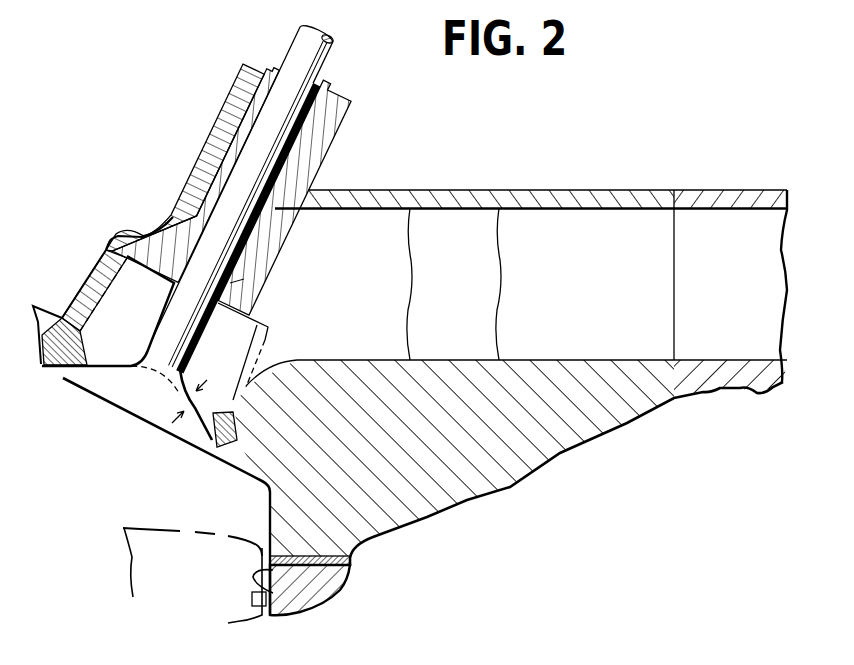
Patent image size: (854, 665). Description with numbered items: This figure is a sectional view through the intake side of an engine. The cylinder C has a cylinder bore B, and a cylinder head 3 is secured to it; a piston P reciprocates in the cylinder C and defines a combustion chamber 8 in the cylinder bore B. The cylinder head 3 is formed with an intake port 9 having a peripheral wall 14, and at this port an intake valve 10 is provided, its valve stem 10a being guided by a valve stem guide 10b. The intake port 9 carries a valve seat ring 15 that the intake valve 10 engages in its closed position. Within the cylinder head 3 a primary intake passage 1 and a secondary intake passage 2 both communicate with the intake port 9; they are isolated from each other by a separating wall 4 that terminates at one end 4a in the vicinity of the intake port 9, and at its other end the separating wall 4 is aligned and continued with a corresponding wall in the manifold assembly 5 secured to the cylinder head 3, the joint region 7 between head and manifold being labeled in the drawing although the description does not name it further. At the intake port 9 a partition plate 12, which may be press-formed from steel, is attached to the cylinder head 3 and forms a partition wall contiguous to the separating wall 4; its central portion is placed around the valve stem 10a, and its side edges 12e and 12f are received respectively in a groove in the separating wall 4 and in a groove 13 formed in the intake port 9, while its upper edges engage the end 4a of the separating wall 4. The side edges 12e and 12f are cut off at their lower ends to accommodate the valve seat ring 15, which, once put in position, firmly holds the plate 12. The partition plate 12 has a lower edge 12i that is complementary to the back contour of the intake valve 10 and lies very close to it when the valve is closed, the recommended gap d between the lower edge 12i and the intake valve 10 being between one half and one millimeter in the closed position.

The primary intake passage 1 is at (464, 230).
The secondary intake passage 2 is at (363, 343).
The cylinder head 3 is at (440, 500).
The separating wall 4 is at (360, 240).
The end of separating wall 4a is at (240, 280).
The manifold assembly 5 is at (720, 197).
The flange 7 is at (572, 200).
The combustion chamber 8 is at (251, 524).
The intake port 9 is at (205, 427).
The intake valve 10 is at (133, 407).
The valve stem 10a is at (312, 55).
The valve stem guide 10b is at (248, 112).
The partition plate 12 is at (247, 325).
The side edge 12e is at (263, 342).
The side edge 12f is at (110, 287).
The lower edge 12i is at (100, 370).
The groove 13 is at (117, 233).
The peripheral wall 14 is at (247, 380).
The valve seat ring 15 is at (227, 447).
The cylinder bore B is at (273, 585).
The cylinder C is at (325, 577).
The piston P is at (150, 558).
The gap distance d is at (197, 397).